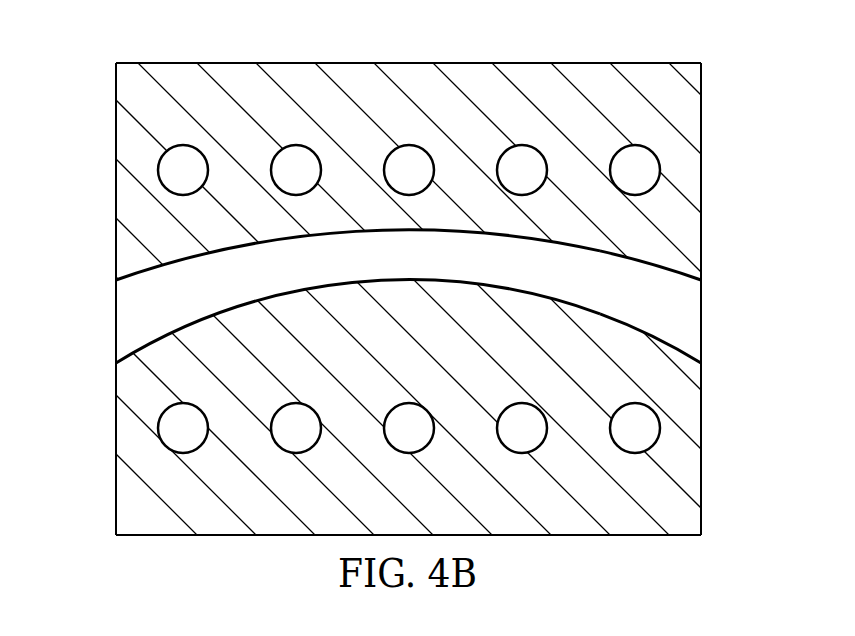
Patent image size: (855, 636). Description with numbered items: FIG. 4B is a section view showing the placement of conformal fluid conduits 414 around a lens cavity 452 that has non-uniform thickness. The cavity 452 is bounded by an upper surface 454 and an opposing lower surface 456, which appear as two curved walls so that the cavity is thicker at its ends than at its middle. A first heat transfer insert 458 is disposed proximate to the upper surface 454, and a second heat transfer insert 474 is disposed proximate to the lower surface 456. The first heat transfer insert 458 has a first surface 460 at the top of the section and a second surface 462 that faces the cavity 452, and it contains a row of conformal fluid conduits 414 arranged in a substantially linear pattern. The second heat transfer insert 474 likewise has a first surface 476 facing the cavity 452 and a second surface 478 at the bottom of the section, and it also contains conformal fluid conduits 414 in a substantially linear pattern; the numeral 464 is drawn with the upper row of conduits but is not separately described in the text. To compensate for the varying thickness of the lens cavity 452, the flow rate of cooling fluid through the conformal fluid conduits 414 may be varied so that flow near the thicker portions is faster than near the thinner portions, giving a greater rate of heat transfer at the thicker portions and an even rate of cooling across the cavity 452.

The conformal fluid conduits 414 is at (388, 160).
The cavity 452 is at (123, 318).
The upper surface 454 is at (676, 273).
The lower surface 456 is at (680, 352).
The first heat transfer insert 458 is at (125, 83).
The first surface 460 is at (590, 63).
The second surface 462 is at (142, 271).
The upper channels 464 is at (157, 171).
The second heat transfer insert 474 is at (125, 487).
The first surface 476 is at (145, 346).
The second surface 478 is at (163, 535).